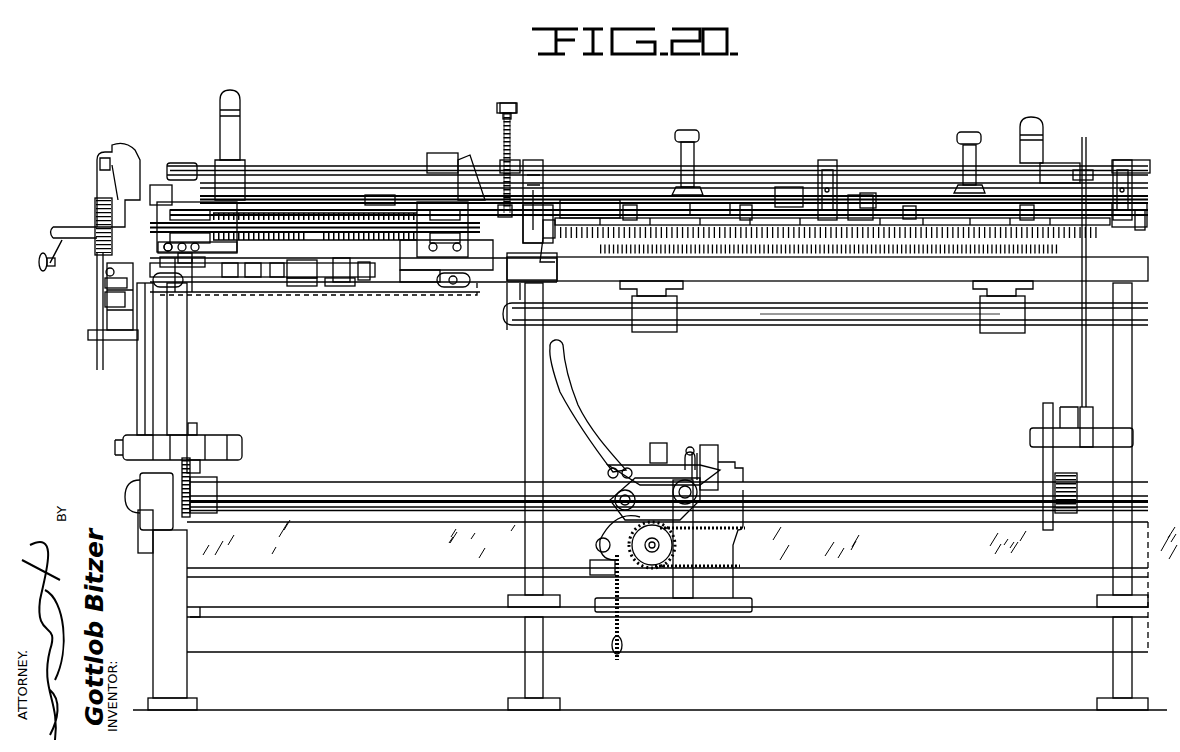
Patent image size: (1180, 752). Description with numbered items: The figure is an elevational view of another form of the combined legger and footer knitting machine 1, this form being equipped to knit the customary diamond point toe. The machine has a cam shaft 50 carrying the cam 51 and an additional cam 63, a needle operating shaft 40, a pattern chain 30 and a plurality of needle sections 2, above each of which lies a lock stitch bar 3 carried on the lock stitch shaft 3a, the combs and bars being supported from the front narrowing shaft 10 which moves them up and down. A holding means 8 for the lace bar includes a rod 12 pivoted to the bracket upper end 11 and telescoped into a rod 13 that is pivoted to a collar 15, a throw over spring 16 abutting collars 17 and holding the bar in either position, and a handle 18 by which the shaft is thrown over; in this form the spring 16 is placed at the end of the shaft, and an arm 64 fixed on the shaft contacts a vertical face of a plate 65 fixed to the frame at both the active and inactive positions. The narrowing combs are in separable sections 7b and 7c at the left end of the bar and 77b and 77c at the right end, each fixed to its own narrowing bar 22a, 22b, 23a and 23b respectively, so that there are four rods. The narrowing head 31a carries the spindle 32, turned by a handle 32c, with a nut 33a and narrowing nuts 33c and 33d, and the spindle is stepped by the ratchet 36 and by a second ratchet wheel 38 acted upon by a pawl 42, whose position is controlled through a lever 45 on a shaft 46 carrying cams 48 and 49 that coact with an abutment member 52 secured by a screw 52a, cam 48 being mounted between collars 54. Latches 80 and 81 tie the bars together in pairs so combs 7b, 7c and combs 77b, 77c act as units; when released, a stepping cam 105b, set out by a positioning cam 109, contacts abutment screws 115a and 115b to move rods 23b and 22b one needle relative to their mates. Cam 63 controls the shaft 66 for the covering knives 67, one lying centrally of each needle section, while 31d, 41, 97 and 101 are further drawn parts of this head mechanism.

The knitting machine 1 is at (47, 343).
The needle section 2 is at (640, 305).
The lock stitch bar 3 is at (713, 247).
The needle bed plate 3a is at (703, 213).
The narrowing comb section 7b is at (570, 233).
The narrowing comb section 7c is at (590, 220).
The holding means 8 is at (540, 88).
The front narrowing shaft 10 is at (760, 167).
The upper end of bracket 11 is at (518, 110).
The rod 12 is at (497, 108).
The rod 13 is at (133, 303).
The collar 15 is at (505, 213).
The throw over spring 16 is at (520, 152).
The collar 17 is at (230, 292).
The handle 18 is at (1142, 227).
The narrowing bar 22a is at (627, 205).
The narrowing bar 22b is at (613, 200).
The narrowing bar 23a is at (780, 187).
The narrowing bar 23b is at (597, 183).
The pattern chain 30 is at (705, 575).
The narrowing head 31a is at (385, 106).
The carriage plate 31d is at (178, 235).
The narrowing spindle 32 is at (322, 222).
The handle 32c is at (37, 262).
The nut 33a is at (172, 248).
The narrowing nut 33c is at (415, 292).
The narrowing nut 33d is at (165, 203).
The ratchet 36 is at (100, 222).
The second ratchet wheel 38 is at (100, 210).
The needle operating shaft 40 is at (880, 310).
The pin 41 is at (103, 300).
The second pawl 42 is at (100, 312).
The lever 45 is at (107, 270).
The shaft 46 is at (253, 292).
The cam 48 is at (292, 292).
The cam 49 is at (330, 292).
The cam shaft 50 is at (840, 488).
The cam 51 is at (190, 490).
The abutment member 52 is at (175, 292).
The screw 52a is at (232, 215).
The collar 54 is at (278, 292).
The cam 63 is at (1043, 470).
The arm 64 is at (513, 283).
The plate 65 is at (545, 217).
The shaft 66 is at (840, 195).
The covering knife 67 is at (695, 130).
The narrowing comb section 77b is at (1092, 200).
The narrowing comb section 77c is at (1060, 183).
The latch 80 is at (187, 247).
The latch 81 is at (380, 200).
The rack 97 is at (317, 213).
The rack 101 is at (300, 205).
The stepping cam 105b is at (185, 243).
The positioning cam 109 is at (430, 183).
The adjustable abutment screw 115a is at (400, 175).
The adjustable abutment screw 115b is at (192, 246).